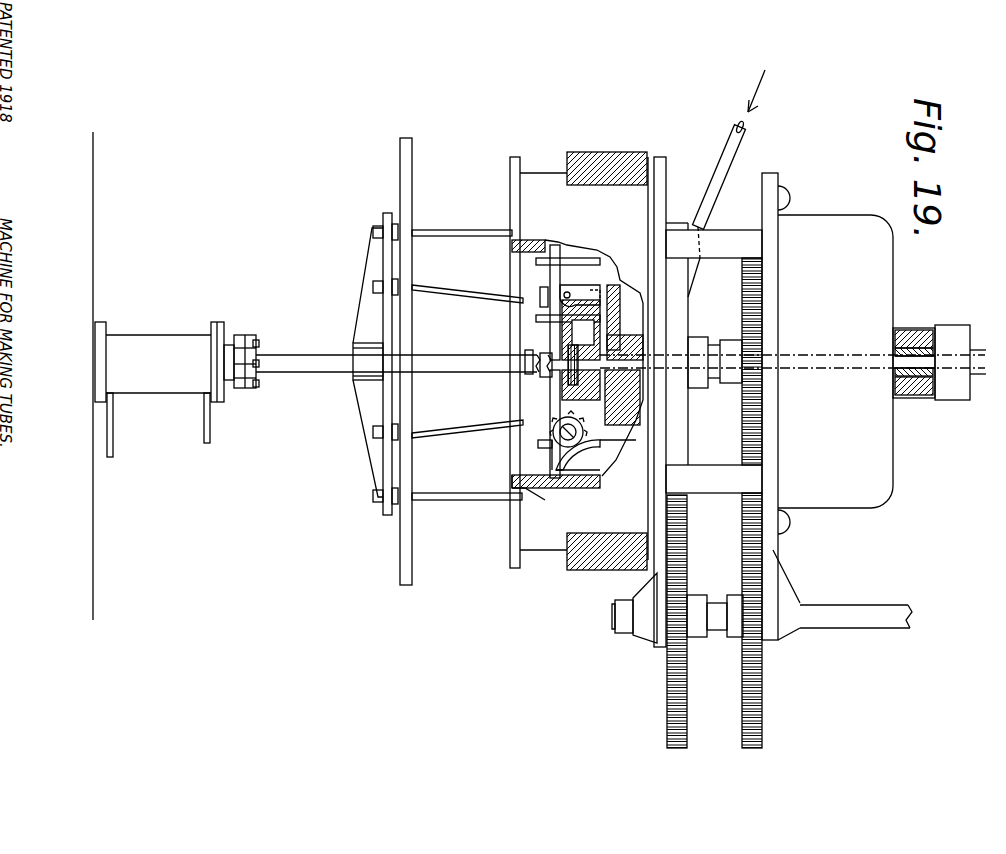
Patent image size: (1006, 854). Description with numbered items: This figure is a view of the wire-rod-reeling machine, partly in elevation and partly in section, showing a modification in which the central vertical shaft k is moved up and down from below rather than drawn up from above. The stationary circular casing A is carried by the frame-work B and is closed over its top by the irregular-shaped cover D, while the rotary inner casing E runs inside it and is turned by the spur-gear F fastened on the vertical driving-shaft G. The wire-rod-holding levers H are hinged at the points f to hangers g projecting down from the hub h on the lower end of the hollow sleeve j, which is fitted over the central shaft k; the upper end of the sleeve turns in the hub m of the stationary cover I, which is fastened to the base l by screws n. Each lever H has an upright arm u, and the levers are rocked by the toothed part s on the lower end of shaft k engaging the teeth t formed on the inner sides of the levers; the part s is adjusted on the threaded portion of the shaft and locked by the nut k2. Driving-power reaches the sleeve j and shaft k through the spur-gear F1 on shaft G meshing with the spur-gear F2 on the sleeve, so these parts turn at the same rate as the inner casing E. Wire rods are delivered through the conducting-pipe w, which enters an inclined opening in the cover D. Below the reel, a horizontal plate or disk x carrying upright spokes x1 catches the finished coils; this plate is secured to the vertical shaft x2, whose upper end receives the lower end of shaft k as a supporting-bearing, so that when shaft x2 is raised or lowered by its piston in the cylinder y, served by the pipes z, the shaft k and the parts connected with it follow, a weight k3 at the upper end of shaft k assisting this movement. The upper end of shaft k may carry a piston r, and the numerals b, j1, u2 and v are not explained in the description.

The stationary circular casing A is at (548, 535).
The frame-work B is at (615, 152).
The cover D is at (660, 177).
The inner casing E is at (545, 480).
The spur-gear F is at (688, 665).
The spur-gear F1 is at (777, 697).
The spur-gear F2 is at (740, 285).
The vertical driving-shaft G is at (865, 615).
The wire-rod-holding levers H is at (560, 283).
The cover or casing I is at (860, 482).
The pawl b is at (627, 287).
The hinge points f is at (558, 290).
The hangers g is at (597, 290).
The hub h is at (560, 307).
The hollow shaft or sleeve j is at (712, 367).
The coupling shaft j1 is at (922, 395).
The central vertical shaft k is at (907, 398).
The nut k2 is at (542, 365).
The weight k3 is at (958, 382).
The base l is at (795, 560).
The hub m is at (910, 330).
The screws n is at (555, 457).
The piston r is at (597, 473).
The toothed part s is at (583, 390).
The teeth t is at (590, 430).
The arm u is at (790, 195).
The boss u2 is at (610, 440).
The disk v is at (567, 247).
The conducting-pipe w is at (732, 163).
The horizontal plate or disk x is at (377, 408).
The upright spokes or arms x1 is at (447, 497).
The vertical shaft x2 is at (298, 362).
The cylinder y is at (172, 370).
The pipes z is at (113, 445).